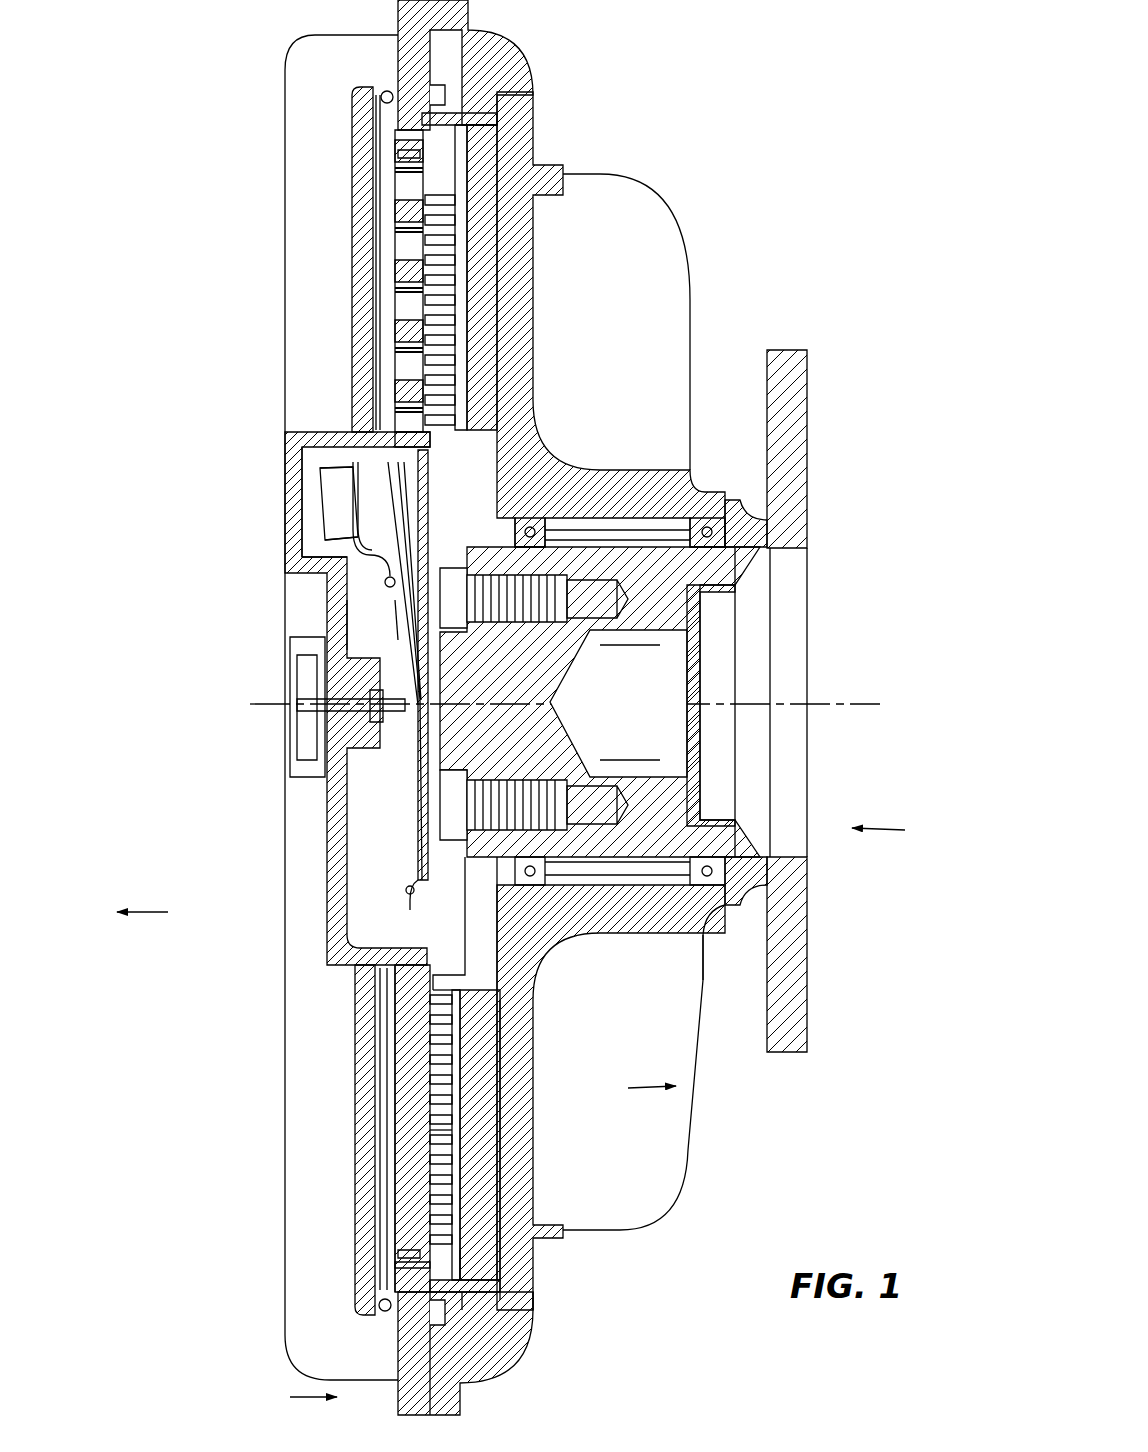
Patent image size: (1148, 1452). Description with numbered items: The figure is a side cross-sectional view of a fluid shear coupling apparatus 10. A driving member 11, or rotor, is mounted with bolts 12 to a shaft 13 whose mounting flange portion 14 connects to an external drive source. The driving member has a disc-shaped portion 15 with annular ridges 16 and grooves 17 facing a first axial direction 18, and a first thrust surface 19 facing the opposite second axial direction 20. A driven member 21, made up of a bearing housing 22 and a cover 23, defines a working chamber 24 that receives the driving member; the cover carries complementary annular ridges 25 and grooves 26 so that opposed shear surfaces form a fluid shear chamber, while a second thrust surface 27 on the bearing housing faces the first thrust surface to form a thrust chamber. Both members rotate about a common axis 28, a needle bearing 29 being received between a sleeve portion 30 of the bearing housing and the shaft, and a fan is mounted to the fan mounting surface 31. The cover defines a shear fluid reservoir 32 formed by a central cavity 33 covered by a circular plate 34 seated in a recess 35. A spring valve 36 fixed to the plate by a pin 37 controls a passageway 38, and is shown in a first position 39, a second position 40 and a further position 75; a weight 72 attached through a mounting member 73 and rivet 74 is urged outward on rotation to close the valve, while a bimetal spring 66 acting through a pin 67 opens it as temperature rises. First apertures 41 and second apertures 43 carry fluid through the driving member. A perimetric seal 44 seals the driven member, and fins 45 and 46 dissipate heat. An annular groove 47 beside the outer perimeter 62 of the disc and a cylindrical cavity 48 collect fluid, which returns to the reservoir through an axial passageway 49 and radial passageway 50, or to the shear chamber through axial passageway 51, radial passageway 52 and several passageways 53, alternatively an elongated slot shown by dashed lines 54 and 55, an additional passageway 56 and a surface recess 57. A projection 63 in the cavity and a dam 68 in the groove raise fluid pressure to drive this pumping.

The fluid shear coupling apparatus 10 is at (894, 840).
The driving member 11 is at (478, 648).
The bolts 12 is at (395, 603).
The shaft 13 is at (788, 500).
The mounting flange portion 14 is at (790, 1010).
The disc-shaped portion 15 is at (482, 1160).
The annular ridges 16 is at (428, 1130).
The annular grooves 17 is at (500, 1143).
The first axial direction 18 is at (152, 890).
The first thrust surface 19 is at (533, 1028).
The second axial direction 20 is at (650, 1104).
The driven member 21 is at (290, 1395).
The bearing housing 22 is at (470, 1330).
The cover 23 is at (382, 1015).
The working chamber 24 is at (408, 1005).
The annular ridges 25 is at (438, 1055).
The annular grooves 26 is at (385, 1085).
The second thrust surface 27 is at (500, 1085).
The common axis 28 is at (828, 702).
The needle bearing 29 is at (612, 870).
The sleeve portion 30 is at (706, 920).
The fan mounting surface 31 is at (535, 1300).
The shear fluid reservoir 32 is at (365, 623).
The central cavity 33 is at (378, 805).
The circular plate 34 is at (430, 693).
The recess 35 is at (432, 985).
The spring valve 36 is at (382, 530).
The pin 37 is at (406, 890).
The passageway 38 is at (528, 528).
The first position 39 is at (328, 490).
The second position 40 is at (342, 500).
The first apertures 41 is at (530, 458).
The second apertures 43 is at (487, 957).
The perimetric seal 44 is at (440, 1381).
The fins 45 is at (312, 74).
The fins 46 is at (690, 1150).
The annular groove 47 is at (400, 1281).
The cylindrical cavity 48 is at (490, 1293).
The axial passageway 49 is at (405, 1262).
The radial passageway 50 is at (366, 1150).
The axial passageway 51 is at (392, 92).
The radial passageway 52 is at (388, 128).
The passageways 53 is at (408, 228).
The dashed lines 54 is at (362, 188).
The dashed lines 55 is at (405, 378).
The additional passageway 56 is at (400, 442).
The surface recess 57 is at (482, 223).
The outer perimeter 62 is at (472, 1255).
The projection 63 is at (472, 118).
The bimetal spring 66 is at (312, 690).
The pin 67 is at (330, 745).
The dam 68 is at (412, 156).
The weight 72 is at (328, 470).
The mounting member 73 is at (396, 528).
The rivet 74 is at (388, 578).
The third position 75 is at (340, 478).